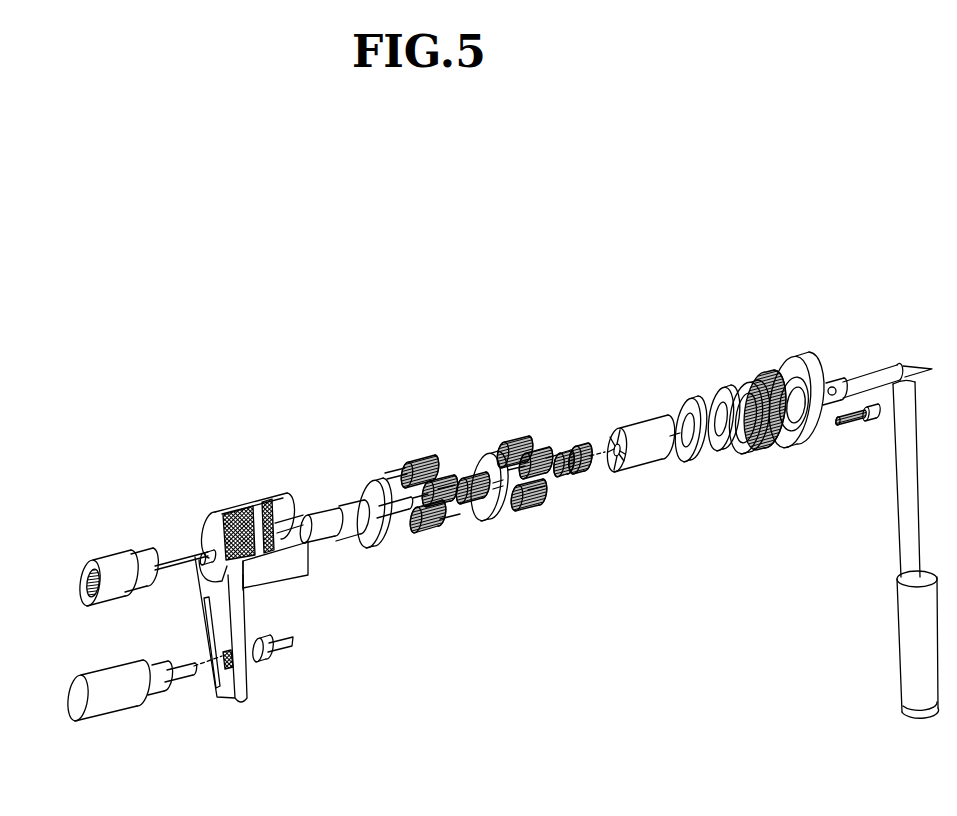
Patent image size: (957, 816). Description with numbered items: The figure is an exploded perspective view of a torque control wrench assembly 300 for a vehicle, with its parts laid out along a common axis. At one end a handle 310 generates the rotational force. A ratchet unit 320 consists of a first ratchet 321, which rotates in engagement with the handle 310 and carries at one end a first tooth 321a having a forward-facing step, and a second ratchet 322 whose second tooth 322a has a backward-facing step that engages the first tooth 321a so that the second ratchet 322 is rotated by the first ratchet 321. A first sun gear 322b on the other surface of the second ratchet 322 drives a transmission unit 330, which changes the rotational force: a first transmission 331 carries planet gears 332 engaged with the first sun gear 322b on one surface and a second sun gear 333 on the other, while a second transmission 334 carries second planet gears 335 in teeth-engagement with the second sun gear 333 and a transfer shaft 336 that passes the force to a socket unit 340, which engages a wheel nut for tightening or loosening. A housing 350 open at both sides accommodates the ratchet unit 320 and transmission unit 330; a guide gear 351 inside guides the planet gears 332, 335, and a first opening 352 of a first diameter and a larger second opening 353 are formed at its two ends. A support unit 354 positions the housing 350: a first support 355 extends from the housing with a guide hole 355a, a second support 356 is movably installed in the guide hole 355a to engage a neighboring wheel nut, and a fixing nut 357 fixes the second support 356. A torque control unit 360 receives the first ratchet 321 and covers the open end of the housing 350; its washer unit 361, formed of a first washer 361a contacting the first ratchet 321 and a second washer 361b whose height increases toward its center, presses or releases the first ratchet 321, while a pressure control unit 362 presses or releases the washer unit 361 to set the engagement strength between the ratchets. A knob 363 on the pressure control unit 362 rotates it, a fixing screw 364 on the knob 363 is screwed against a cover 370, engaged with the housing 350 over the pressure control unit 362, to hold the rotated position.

The torque control wrench assembly 300 is at (479, 252).
The handle 310 is at (900, 655).
The ratchet unit 320 is at (567, 318).
The first ratchet 321 is at (643, 440).
The first tooth 321a is at (614, 440).
The second ratchet 322 is at (588, 350).
The second tooth 322a is at (583, 446).
The first sun gear 322b is at (563, 452).
The transmission unit 330 is at (538, 568).
The first transmission 331 is at (490, 515).
The planet gears 332 is at (532, 505).
The second sun gear 333 is at (468, 505).
The second transmission 334 is at (378, 540).
The second planet gears 335 is at (428, 520).
The transfer shaft 336 is at (350, 535).
The socket unit 340 is at (105, 562).
The housing 350 is at (228, 508).
The guide gear 351 is at (262, 508).
The first opening 352 is at (207, 555).
The second opening 353 is at (280, 520).
The support unit 354 is at (278, 786).
The first support 355 is at (243, 703).
The guide hole 355a is at (227, 668).
The second support 356 is at (113, 702).
The fixing nut 357 is at (275, 662).
The torque control unit 360 is at (713, 566).
The washer unit 361 is at (738, 538).
The first washer 361a is at (692, 450).
The second washer 361b is at (726, 445).
The pressure control unit 362 is at (760, 452).
The knob 363 is at (842, 424).
The fixing screw 364 is at (780, 448).
The cover 370 is at (812, 368).